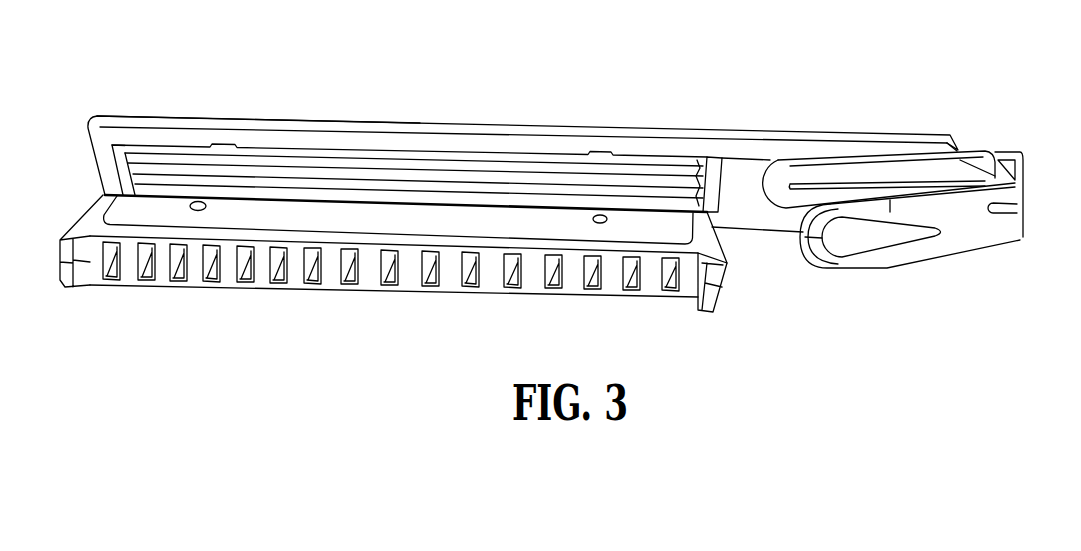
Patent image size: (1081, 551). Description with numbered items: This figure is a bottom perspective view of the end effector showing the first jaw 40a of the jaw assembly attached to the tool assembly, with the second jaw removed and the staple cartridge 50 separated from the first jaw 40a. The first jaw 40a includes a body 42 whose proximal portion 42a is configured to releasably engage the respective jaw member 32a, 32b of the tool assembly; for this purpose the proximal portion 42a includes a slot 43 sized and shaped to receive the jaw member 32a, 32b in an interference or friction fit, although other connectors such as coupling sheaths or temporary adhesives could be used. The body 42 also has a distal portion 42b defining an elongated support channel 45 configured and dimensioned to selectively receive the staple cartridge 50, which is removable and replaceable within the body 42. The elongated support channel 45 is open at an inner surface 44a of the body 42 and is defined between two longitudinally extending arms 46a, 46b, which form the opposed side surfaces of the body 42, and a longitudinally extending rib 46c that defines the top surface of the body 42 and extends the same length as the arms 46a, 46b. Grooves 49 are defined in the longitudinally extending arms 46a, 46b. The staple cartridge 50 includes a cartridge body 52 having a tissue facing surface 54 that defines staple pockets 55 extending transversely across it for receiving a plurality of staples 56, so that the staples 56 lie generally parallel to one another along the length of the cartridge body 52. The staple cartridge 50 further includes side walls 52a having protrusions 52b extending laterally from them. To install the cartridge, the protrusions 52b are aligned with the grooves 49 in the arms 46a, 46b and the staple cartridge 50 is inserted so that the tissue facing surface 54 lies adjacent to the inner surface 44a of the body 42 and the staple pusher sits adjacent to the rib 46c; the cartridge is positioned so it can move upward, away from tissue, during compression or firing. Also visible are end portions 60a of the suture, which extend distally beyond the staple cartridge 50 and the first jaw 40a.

The jaw member 32a is at (973, 153).
The jaw member 32b is at (953, 248).
The first jaw 40a is at (305, 99).
The body 42 is at (262, 119).
The proximal portion 42a is at (787, 132).
The distal portion 42b is at (352, 118).
The slot 43 is at (802, 170).
The inner surface 44a is at (99, 136).
The elongated support channel 45 is at (190, 177).
The longitudinally extending arm 46a is at (677, 147).
The longitudinally extending arm 46b is at (683, 202).
The longitudinally extending rib 46c is at (455, 167).
The grooves 49 is at (222, 143).
The staple cartridge 50 is at (130, 296).
The cartridge body 52 is at (693, 263).
The side walls 52a is at (447, 230).
The protrusions 52b is at (197, 212).
The tissue facing surface 54 is at (680, 293).
The staple pockets 55 is at (627, 263).
The staples 56 is at (592, 285).
The end portions 60a is at (1005, 106).